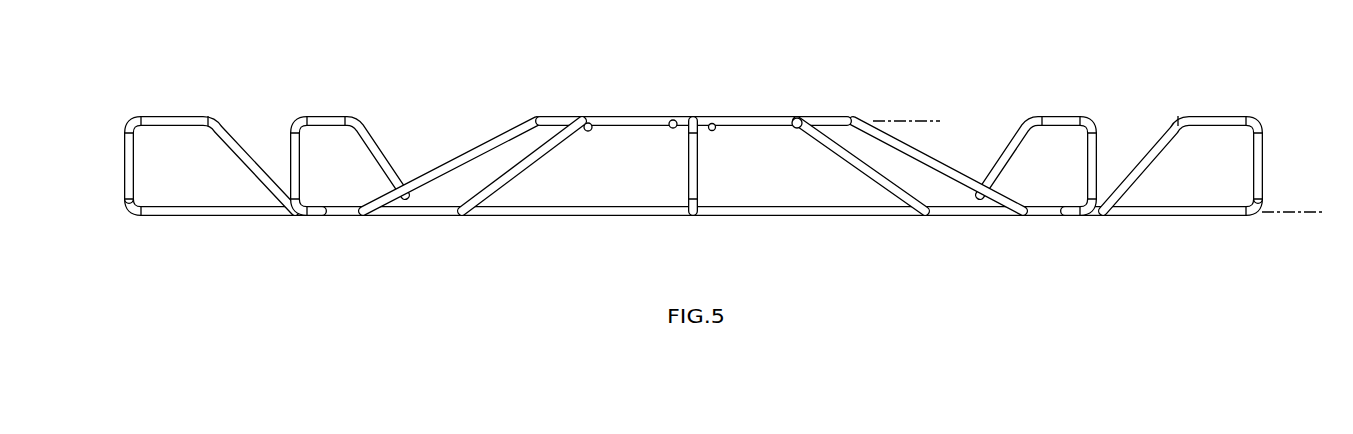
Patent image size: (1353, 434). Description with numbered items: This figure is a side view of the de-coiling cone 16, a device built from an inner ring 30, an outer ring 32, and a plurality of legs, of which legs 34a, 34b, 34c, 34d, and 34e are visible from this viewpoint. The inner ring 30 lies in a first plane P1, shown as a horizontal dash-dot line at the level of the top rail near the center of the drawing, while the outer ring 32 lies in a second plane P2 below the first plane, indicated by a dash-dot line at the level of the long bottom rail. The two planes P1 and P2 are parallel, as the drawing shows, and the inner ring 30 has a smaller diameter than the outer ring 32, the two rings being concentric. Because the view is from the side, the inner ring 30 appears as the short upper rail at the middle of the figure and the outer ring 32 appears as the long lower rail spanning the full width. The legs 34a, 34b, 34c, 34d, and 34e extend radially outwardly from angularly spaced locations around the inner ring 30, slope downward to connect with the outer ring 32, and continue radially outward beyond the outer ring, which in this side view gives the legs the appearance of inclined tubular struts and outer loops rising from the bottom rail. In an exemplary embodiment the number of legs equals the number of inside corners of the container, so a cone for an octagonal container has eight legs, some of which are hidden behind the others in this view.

The de-coiling cone 16 is at (697, 142).
The inner ring 30 is at (745, 115).
The outer ring 32 is at (592, 218).
The leg 34a is at (106, 125).
The leg 34b is at (326, 96).
The leg 34c is at (693, 164).
The leg 34d is at (1067, 99).
The leg 34e is at (1280, 121).
The first plane P1 is at (912, 121).
The second plane P2 is at (1297, 212).